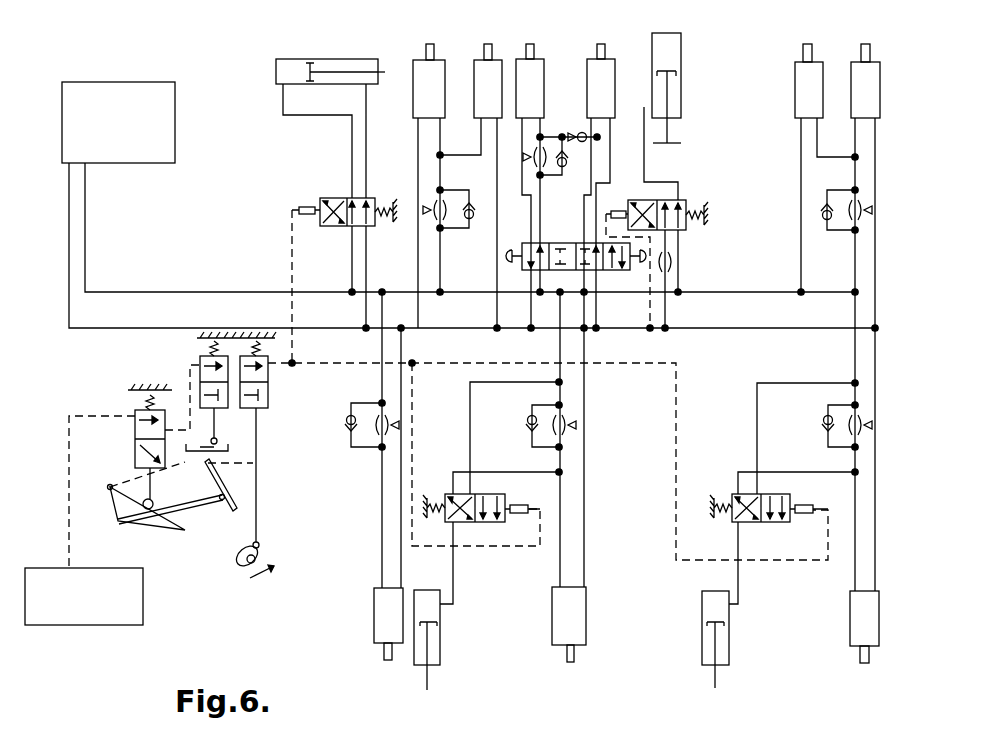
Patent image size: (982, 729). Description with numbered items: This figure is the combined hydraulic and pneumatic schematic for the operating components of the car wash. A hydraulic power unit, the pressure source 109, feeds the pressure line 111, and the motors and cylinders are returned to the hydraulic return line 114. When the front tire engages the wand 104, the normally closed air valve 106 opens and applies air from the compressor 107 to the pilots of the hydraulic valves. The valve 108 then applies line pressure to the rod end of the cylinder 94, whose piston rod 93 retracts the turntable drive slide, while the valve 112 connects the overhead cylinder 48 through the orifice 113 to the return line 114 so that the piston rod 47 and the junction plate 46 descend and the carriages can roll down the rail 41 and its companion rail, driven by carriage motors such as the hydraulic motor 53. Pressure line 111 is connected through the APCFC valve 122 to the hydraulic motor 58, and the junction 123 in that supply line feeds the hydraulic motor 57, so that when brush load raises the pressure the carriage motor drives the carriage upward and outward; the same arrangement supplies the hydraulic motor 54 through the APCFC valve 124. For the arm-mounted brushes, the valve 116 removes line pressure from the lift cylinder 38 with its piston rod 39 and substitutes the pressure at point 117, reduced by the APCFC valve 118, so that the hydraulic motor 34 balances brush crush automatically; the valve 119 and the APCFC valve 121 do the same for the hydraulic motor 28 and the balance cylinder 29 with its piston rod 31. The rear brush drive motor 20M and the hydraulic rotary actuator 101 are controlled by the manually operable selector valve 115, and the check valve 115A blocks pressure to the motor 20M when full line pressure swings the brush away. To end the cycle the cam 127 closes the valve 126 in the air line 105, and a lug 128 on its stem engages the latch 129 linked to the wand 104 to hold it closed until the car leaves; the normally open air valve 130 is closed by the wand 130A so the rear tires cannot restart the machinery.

The drive motor 20M is at (540, 82).
The hydraulic motor 28 is at (852, 610).
The balance and lifting cylinder 29 is at (729, 645).
The piston rod 31 is at (716, 682).
The hydraulic motor 34 is at (586, 615).
The hydraulic cylinder and piston assembly 38 is at (440, 640).
The piston rod 39 is at (428, 685).
The rail 41 is at (374, 612).
The plate 46 is at (690, 144).
The piston rod 47 is at (685, 131).
The cylinder 48 is at (683, 86).
The hydraulic motor 53 is at (797, 100).
The hydraulic motor 54 is at (857, 77).
The hydraulic motor 57 is at (487, 78).
The hydraulic motor 58 is at (425, 90).
The piston rod 93 is at (386, 72).
The cylinder 94 is at (276, 68).
The hydraulic rotary actuator 101 is at (608, 80).
The wand 104 is at (170, 531).
The air line 105 is at (200, 357).
The air valve 106 is at (135, 431).
The compressor 107 is at (70, 625).
The valve 108 is at (330, 197).
The hydraulic pressure source 109 is at (114, 82).
The pressure line 111 is at (98, 290).
The valve 112 is at (682, 199).
The orifice 113 is at (672, 265).
The hydraulic return line 114 is at (90, 330).
The manually operable selector valve 115 is at (562, 243).
The check valve 115A is at (576, 133).
The valve 116 is at (491, 523).
The point 117 is at (565, 472).
The adjustable pressure-compensated flow-control valve 118 is at (575, 420).
The valve 119 is at (766, 523).
The valve 121 is at (833, 448).
The APCFC valve 122 is at (465, 234).
The junction 123 is at (441, 154).
The APCFC valve 124 is at (833, 237).
The valve 126 is at (268, 388).
The cam 127 is at (240, 561).
The lug 128 is at (240, 508).
The latch 129 is at (226, 510).
The air valve 130 is at (200, 378).
The wand 130A is at (230, 451).